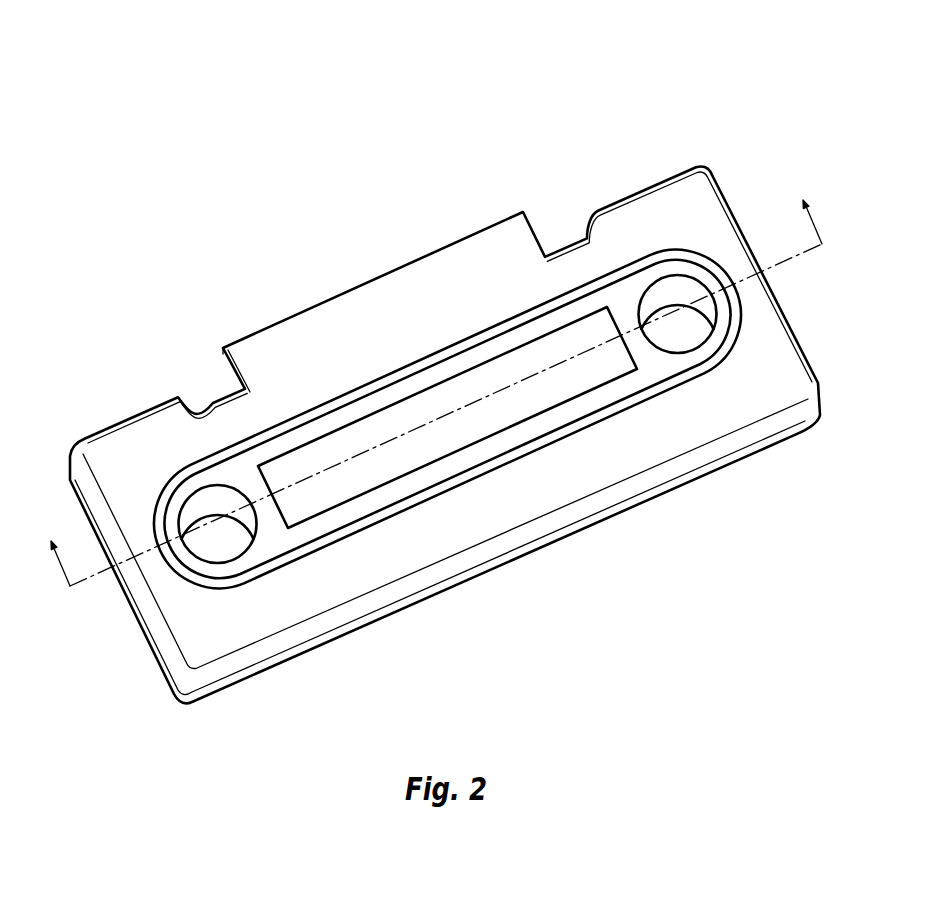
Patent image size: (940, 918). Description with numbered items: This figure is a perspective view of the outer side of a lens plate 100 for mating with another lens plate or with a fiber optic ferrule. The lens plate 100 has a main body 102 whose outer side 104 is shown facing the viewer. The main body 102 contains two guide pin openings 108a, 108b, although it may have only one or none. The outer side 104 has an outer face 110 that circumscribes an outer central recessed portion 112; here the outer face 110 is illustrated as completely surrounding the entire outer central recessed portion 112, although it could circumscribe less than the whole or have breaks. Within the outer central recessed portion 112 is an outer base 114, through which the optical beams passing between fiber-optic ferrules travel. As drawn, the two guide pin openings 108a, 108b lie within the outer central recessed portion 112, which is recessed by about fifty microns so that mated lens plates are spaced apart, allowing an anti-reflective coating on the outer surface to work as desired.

The lens plate 100 is at (471, 372).
The main body 102 is at (182, 647).
The outer side 104 is at (788, 383).
The guide pin opening 108a is at (717, 317).
The guide pin opening 108b is at (189, 551).
The outer face 110 is at (692, 440).
The outer central recessed portion 112 is at (593, 398).
The outer base 114 is at (498, 422).